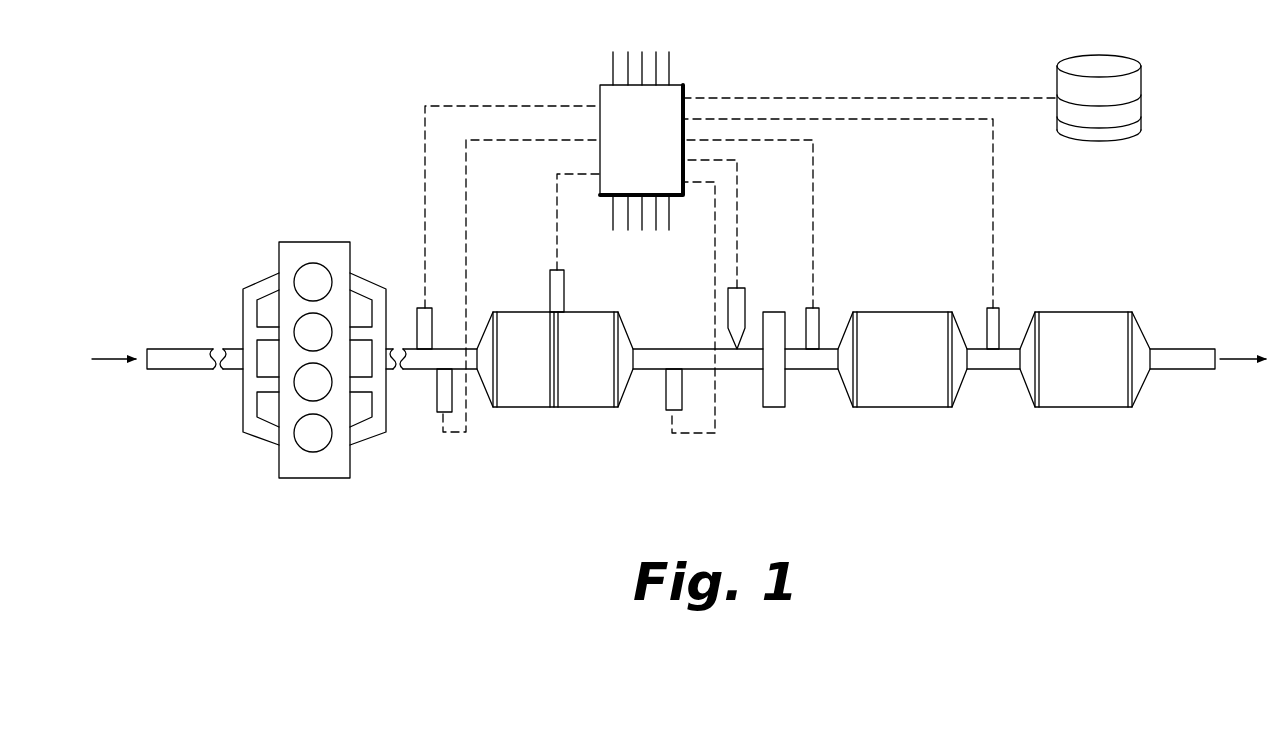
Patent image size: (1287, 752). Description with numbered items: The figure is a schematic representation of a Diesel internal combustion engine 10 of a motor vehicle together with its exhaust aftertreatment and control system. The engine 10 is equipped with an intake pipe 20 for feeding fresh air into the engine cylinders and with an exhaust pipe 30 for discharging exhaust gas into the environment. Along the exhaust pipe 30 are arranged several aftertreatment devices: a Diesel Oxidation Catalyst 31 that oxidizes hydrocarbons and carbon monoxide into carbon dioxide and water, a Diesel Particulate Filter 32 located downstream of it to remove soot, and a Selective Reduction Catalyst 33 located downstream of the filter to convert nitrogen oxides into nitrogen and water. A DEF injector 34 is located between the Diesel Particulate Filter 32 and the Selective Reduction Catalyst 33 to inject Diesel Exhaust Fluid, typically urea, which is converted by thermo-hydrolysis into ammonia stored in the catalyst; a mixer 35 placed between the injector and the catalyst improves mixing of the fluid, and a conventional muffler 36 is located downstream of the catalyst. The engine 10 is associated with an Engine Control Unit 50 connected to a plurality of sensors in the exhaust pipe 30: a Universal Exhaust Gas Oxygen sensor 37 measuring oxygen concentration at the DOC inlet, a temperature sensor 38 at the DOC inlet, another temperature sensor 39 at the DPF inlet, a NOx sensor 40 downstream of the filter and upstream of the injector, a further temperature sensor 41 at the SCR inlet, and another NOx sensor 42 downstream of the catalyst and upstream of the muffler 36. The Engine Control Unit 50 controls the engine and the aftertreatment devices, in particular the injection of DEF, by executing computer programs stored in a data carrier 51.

The internal combustion engine 10 is at (238, 219).
The intake pipe 20 is at (190, 367).
The exhaust pipe 30 is at (995, 360).
The Diesel Oxidation Catalyst 31 is at (522, 397).
The Diesel Particulate Filter 32 is at (587, 393).
The Selective Reduction Catalyst 33 is at (903, 392).
The DEF injector 34 is at (738, 300).
The mixer 35 is at (772, 405).
The muffler 36 is at (1085, 397).
The Universal Exhaust Gas Oxygen sensor 37 is at (420, 316).
The temperature sensor 38 is at (442, 386).
The temperature sensor 39 is at (555, 290).
The NOx sensor 40 is at (669, 393).
The temperature sensor 41 is at (815, 316).
The NOx sensor 42 is at (996, 316).
The Engine Control Unit 50 is at (600, 86).
The data carrier 51 is at (1122, 62).